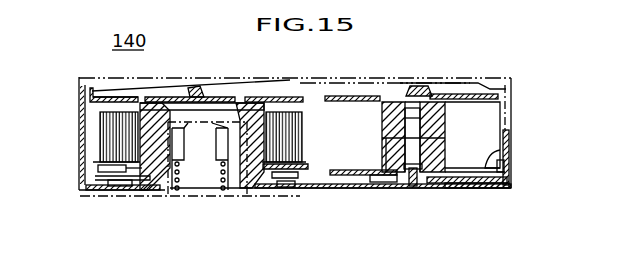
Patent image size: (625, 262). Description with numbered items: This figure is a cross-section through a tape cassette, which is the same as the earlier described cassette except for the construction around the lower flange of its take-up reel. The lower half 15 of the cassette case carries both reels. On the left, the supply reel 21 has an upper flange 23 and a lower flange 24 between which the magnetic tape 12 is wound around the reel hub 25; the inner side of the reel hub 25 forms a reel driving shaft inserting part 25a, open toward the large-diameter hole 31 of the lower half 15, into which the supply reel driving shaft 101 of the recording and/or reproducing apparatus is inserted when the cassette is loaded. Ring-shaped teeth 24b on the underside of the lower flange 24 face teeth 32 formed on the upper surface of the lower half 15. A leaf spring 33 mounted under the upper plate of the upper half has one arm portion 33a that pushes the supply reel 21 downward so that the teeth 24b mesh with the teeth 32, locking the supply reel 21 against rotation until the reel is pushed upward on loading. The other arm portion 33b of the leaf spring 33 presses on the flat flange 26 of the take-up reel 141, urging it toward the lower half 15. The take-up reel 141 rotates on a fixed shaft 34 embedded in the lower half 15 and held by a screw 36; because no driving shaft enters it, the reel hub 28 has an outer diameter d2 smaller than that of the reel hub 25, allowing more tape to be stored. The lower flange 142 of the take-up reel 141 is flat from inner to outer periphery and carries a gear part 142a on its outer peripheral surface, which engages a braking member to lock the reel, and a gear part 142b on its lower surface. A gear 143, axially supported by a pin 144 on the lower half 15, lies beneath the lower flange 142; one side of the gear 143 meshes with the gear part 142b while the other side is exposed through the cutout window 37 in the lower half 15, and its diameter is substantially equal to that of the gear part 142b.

The lower half 15 is at (82, 178).
The upper flange 23 is at (90, 96).
The supply reel 21 is at (106, 96).
The arm portion 33a is at (192, 96).
The leaf spring 33 is at (298, 98).
The arm portion 33b is at (425, 92).
The take-up reel 141 is at (470, 93).
The flange 26 is at (500, 90).
The magnetic tape 12 is at (98, 131).
The lower flange 24 is at (100, 168).
The teeth 24b is at (100, 188).
The teeth 32 is at (112, 190).
The hole 31 is at (268, 194).
The reel hub 25 is at (255, 139).
The reel driving shaft inserting part 25a is at (242, 190).
The supply reel driving shaft 101 is at (148, 194).
The reel hub 28 is at (383, 128).
The outer diameter d2 is at (386, 152).
The fixed shaft 34 is at (444, 127).
The screw 36 is at (415, 188).
The gear part 142b is at (368, 188).
The pin 144 is at (477, 188).
The lower flange 142 is at (483, 168).
The gear part 142a is at (512, 153).
The cutout window 37 is at (512, 170).
The gear 143 is at (502, 184).